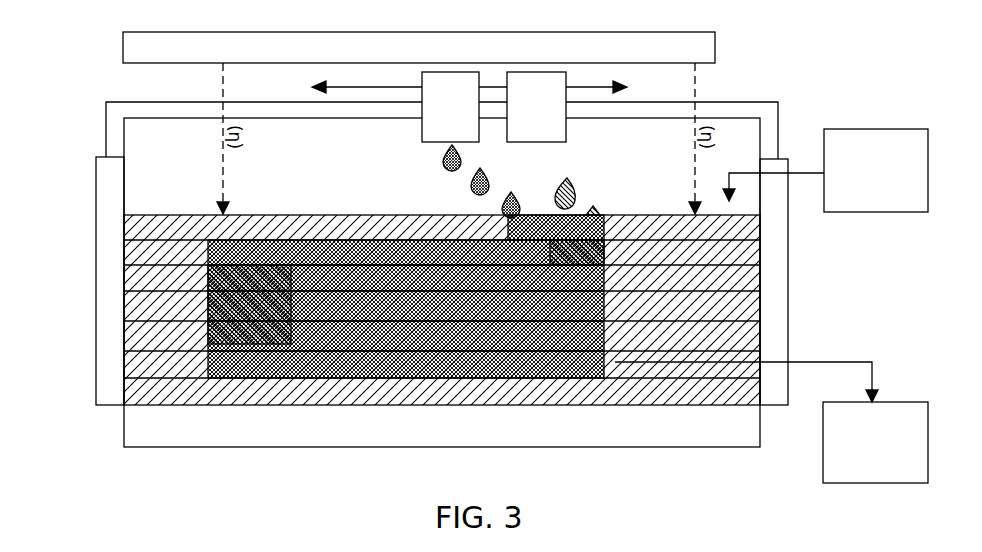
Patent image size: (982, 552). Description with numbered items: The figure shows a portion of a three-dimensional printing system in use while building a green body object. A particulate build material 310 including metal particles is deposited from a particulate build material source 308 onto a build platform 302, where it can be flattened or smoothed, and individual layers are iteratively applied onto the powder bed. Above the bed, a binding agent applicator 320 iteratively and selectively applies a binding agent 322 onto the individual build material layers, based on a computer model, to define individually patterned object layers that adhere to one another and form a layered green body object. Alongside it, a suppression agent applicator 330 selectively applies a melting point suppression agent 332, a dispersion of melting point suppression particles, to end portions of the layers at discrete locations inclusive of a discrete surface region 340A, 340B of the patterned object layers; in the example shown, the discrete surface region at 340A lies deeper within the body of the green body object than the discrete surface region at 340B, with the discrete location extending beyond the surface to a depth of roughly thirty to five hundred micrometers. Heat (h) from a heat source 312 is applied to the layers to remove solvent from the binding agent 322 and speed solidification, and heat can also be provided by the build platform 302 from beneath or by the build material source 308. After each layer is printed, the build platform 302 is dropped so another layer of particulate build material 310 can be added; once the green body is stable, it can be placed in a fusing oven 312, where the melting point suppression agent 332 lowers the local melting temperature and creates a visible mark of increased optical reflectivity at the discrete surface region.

The build platform 302 is at (602, 417).
The particulate build material source 308 is at (857, 186).
The particulate build material 310 is at (187, 251).
The heat source 312 is at (401, 59).
The binding agent applicator 320 is at (431, 119).
The binding agent 322 is at (445, 161).
The suppression agent applicator 330 is at (517, 119).
The melting point suppression agent 332 is at (576, 194).
The discrete surface region 340A is at (207, 302).
The discrete surface region 340B is at (613, 249).